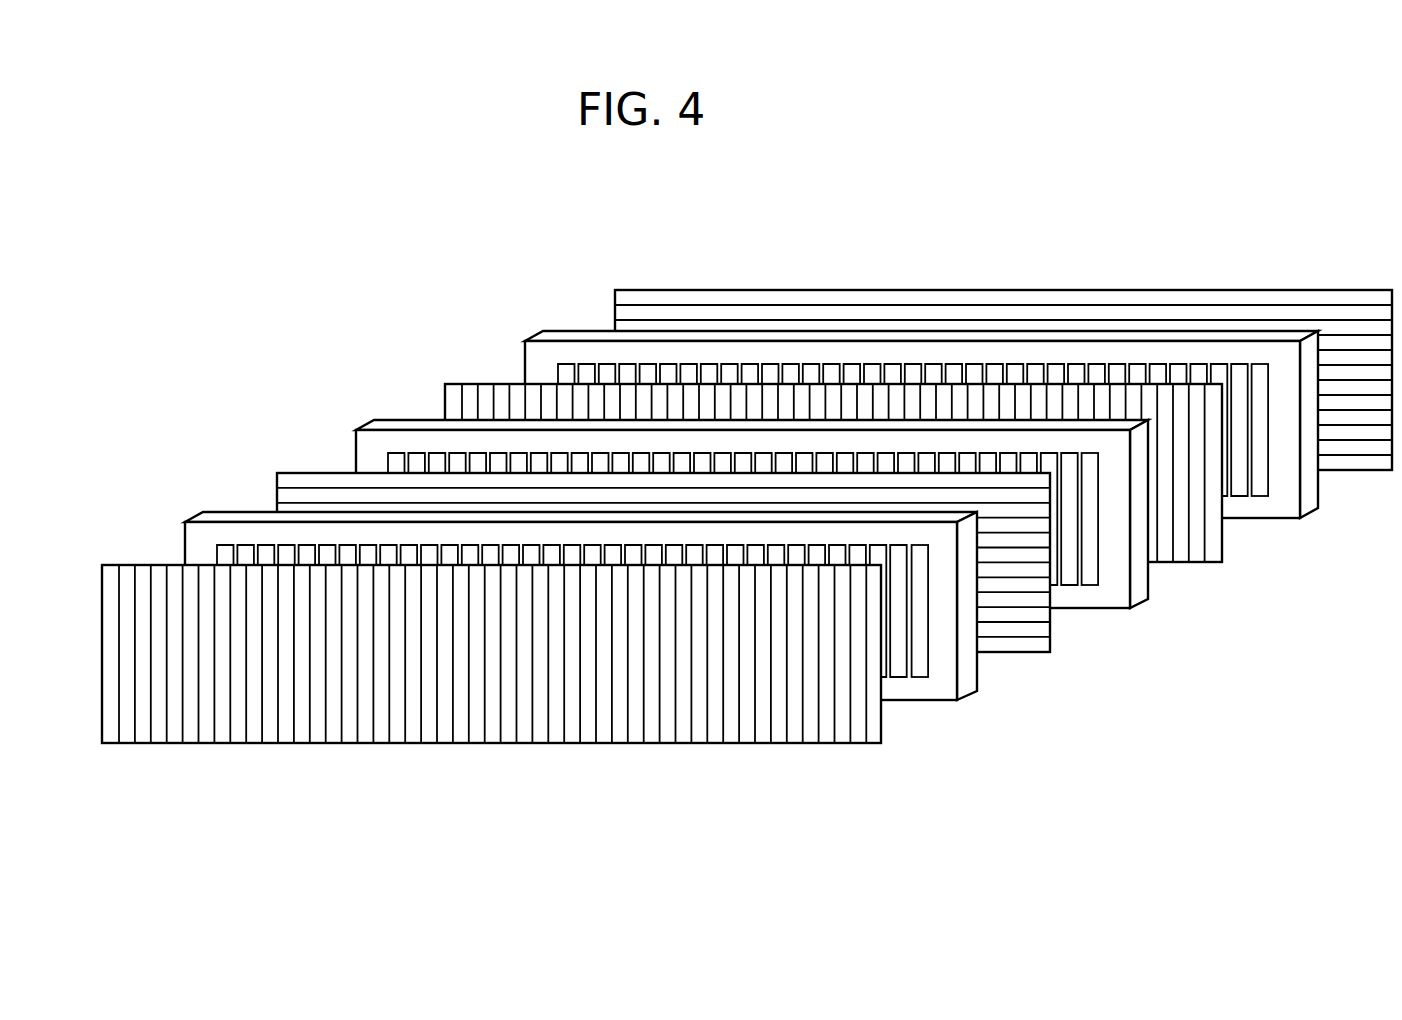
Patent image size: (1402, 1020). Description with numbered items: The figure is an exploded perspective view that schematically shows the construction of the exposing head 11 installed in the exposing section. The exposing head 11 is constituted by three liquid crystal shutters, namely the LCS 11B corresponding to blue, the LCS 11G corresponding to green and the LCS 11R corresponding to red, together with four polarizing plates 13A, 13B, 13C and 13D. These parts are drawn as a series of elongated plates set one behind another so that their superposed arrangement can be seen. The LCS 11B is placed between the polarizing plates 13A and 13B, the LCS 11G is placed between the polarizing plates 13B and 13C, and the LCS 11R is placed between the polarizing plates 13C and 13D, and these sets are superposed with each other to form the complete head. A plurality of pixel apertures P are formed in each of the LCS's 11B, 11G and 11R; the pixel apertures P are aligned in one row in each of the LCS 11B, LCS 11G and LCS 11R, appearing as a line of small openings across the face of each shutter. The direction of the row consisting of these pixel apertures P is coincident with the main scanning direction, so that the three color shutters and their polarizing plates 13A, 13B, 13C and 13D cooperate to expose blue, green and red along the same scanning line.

The exposing head 11 is at (418, 242).
The LCS 11R is at (541, 332).
The LCS 11G is at (372, 418).
The LCS 11B is at (567, 581).
The polarizing plate 13A is at (880, 724).
The polarizing plate 13B is at (1040, 648).
The polarizing plate 13C is at (1213, 563).
The polarizing plate 13D is at (1370, 471).
The pixel aperture P is at (930, 662).